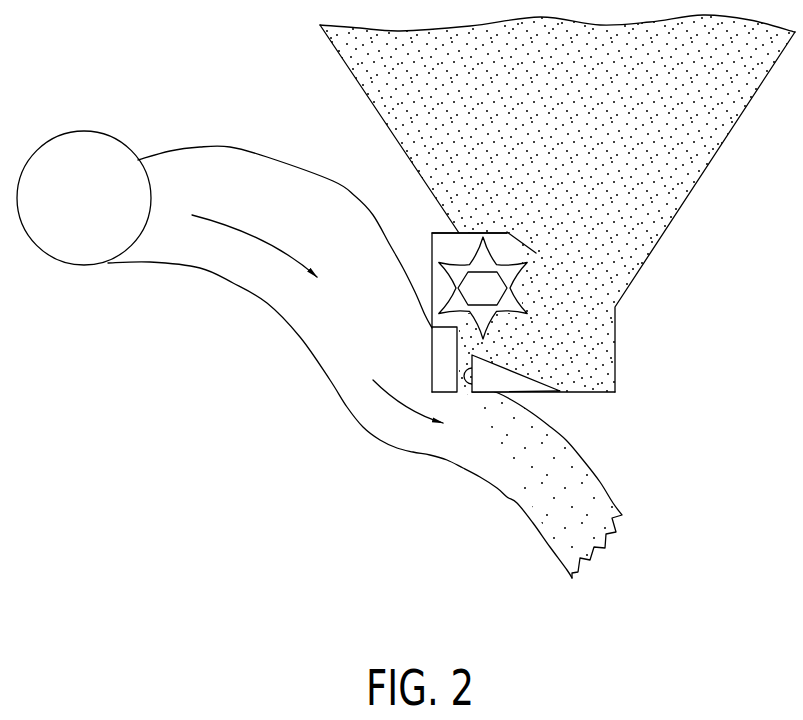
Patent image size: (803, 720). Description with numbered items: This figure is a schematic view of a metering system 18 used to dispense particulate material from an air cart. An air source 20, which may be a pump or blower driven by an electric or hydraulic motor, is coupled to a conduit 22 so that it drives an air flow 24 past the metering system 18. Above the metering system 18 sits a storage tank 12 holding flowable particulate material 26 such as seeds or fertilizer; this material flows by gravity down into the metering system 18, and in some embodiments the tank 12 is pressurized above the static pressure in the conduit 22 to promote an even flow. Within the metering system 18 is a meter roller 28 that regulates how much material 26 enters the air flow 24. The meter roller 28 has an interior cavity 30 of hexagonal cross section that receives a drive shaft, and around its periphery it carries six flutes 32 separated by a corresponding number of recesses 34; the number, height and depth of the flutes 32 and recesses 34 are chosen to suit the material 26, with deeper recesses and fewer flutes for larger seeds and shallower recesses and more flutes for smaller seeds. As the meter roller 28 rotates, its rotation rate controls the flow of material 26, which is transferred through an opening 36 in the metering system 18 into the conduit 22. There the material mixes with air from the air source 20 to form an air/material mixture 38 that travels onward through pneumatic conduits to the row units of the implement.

The storage tank 12 is at (343, 52).
The metering system 18 is at (420, 230).
The air source 20 is at (82, 131).
The conduit 22 is at (300, 338).
The air flow 24 is at (253, 232).
The flowable particulate material 26 is at (717, 124).
The meter roller 28 is at (538, 253).
The interior cavity 30 is at (468, 306).
The flutes 32 is at (446, 262).
The recesses 34 is at (498, 263).
The opening 36 is at (560, 391).
The air/material mixture 38 is at (527, 490).